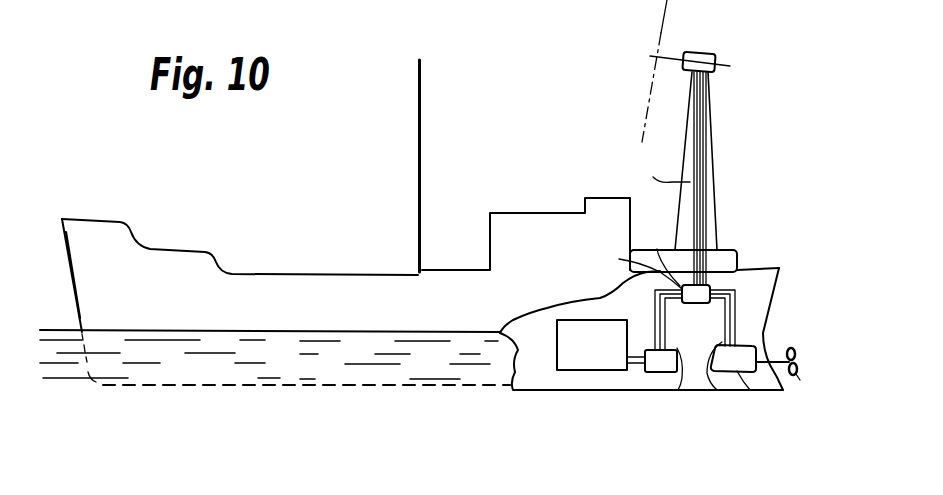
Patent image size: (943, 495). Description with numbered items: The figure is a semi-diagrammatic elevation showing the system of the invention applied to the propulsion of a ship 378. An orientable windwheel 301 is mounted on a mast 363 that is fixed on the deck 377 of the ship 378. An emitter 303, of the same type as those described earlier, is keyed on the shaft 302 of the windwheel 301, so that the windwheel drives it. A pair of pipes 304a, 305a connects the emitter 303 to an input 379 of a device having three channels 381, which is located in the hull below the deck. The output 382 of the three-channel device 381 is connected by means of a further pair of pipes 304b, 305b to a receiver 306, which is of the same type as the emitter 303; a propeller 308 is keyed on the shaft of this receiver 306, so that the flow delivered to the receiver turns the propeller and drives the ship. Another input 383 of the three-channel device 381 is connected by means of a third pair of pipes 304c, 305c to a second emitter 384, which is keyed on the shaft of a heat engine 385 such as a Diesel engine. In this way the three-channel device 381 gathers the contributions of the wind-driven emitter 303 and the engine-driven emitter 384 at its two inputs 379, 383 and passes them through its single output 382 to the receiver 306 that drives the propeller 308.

The orientable windwheel 301 is at (661, 23).
The shaft of the windwheel 302 is at (673, 54).
The emitter 303 is at (705, 58).
The pipe 304a is at (656, 166).
The pipe 304b is at (746, 380).
The pipe 304c is at (657, 323).
The pipe 305a is at (705, 147).
The pipe 305b is at (737, 331).
The pipe 305c is at (680, 373).
The receiver 306 is at (756, 375).
The propeller 308 is at (794, 377).
The mast 363 is at (715, 195).
The deck 377 is at (745, 260).
The ship 378 is at (60, 242).
The input 379 is at (656, 255).
The three-channel device 381 is at (701, 313).
The output 382 is at (713, 288).
The input 383 is at (631, 266).
The emitter 384 is at (658, 365).
The heat engine 385 is at (585, 362).